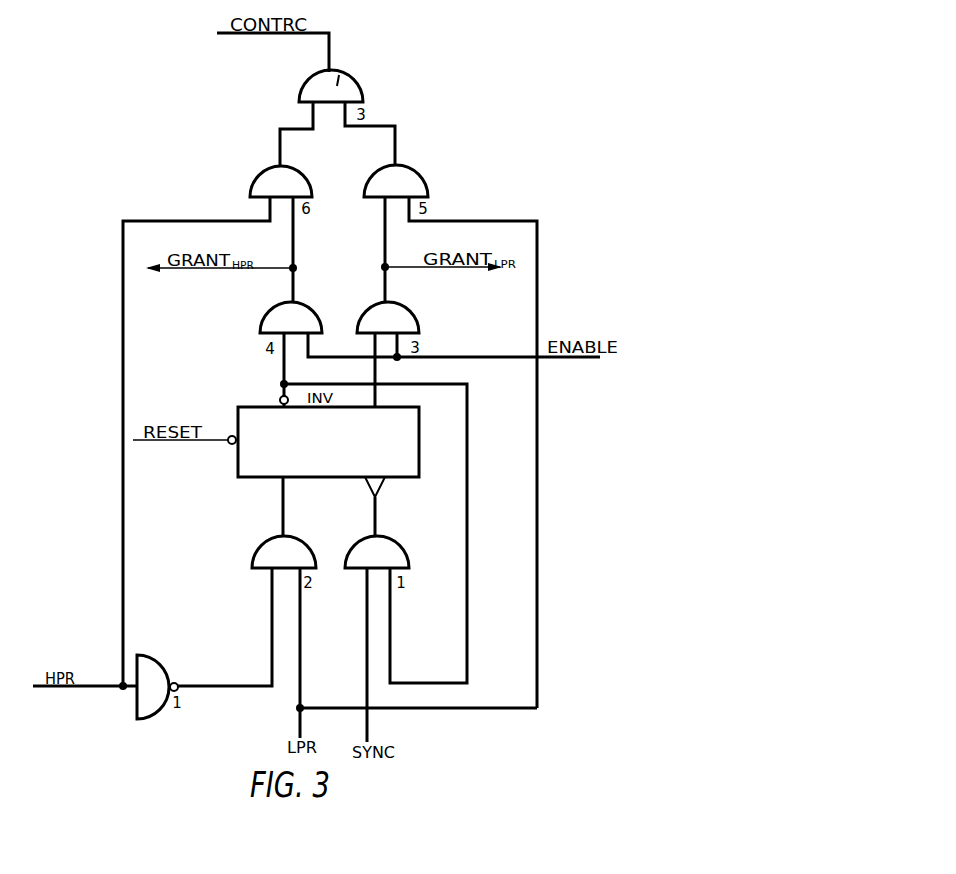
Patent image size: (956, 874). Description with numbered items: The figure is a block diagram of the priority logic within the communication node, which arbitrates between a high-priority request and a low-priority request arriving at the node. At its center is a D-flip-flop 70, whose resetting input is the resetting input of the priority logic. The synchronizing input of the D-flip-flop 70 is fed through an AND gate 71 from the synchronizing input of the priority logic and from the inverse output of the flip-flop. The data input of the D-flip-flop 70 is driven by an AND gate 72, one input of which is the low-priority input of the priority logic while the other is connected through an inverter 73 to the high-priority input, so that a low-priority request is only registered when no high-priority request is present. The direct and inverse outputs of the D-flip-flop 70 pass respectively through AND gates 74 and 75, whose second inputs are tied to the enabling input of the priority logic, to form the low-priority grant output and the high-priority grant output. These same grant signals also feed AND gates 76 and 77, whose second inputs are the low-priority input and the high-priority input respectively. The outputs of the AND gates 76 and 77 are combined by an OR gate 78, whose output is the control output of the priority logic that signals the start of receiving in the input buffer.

The D-flip-flop 70 is at (317, 441).
The AND gate 71 is at (367, 563).
The AND gate 72 is at (274, 563).
The inverter 73 is at (143, 695).
The AND gate 74 is at (378, 329).
The AND gate 75 is at (281, 329).
The AND gate 76 is at (386, 192).
The AND gate 77 is at (271, 192).
The OR gate 78 is at (342, 72).